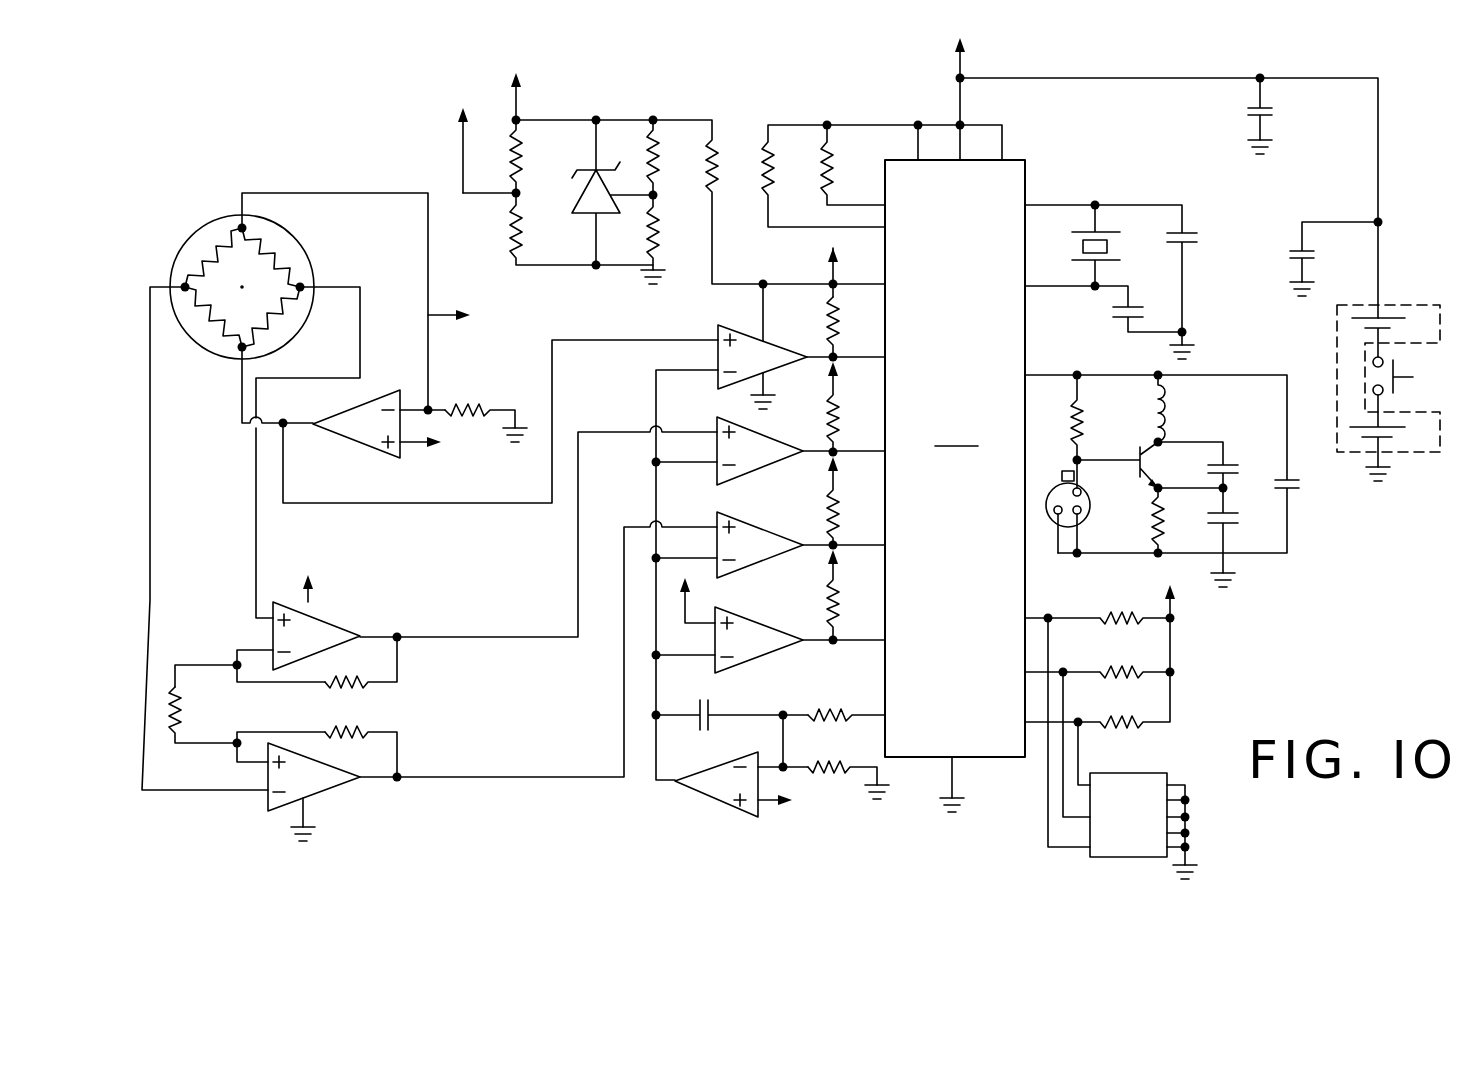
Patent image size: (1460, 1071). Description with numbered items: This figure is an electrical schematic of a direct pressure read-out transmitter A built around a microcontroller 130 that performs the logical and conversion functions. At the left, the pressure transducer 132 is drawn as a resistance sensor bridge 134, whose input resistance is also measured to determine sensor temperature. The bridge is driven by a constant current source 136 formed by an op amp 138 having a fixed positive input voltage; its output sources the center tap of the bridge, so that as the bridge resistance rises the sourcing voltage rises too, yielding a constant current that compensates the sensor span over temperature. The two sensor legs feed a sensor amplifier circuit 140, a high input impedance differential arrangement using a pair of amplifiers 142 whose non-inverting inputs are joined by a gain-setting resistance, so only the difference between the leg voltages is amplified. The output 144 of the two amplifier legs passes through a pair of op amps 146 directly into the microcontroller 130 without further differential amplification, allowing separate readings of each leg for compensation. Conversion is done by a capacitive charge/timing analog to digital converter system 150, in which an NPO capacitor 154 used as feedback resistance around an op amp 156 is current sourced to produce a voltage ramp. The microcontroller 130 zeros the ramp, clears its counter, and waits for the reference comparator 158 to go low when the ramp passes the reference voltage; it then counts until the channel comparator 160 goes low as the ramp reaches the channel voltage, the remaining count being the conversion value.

The microcontroller 130 is at (955, 486).
The pressure transducer 132 is at (283, 262).
The sensor bridge 134 is at (300, 252).
The constant current source 136 is at (450, 432).
The op amp 138 is at (368, 408).
The sensor amplifier circuit 140 is at (403, 703).
The amplifiers 142 is at (315, 632).
The output 144 is at (539, 657).
The op amps 146 is at (753, 515).
The analog to digital converter system 150 is at (687, 807).
The NPO capacitor 154 is at (728, 700).
The op amp 156 is at (727, 792).
The reference comparator 158 is at (745, 628).
The channel comparator 160 is at (748, 345).
The transmitter A is at (527, 797).